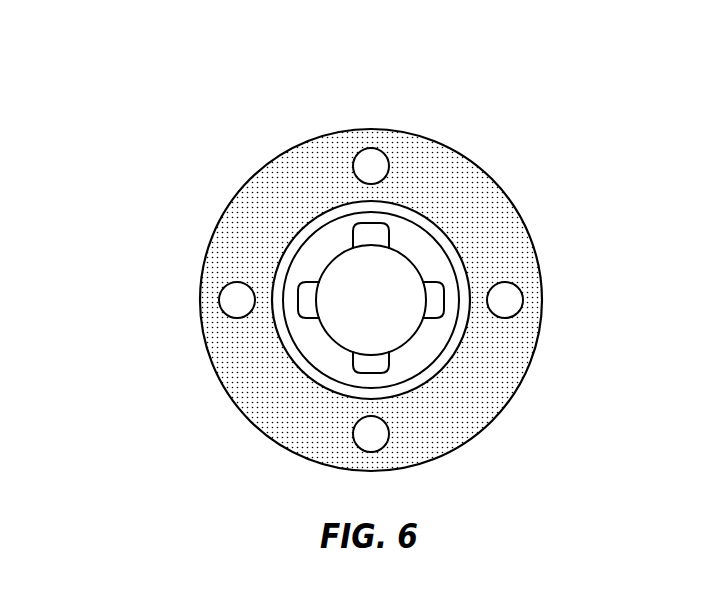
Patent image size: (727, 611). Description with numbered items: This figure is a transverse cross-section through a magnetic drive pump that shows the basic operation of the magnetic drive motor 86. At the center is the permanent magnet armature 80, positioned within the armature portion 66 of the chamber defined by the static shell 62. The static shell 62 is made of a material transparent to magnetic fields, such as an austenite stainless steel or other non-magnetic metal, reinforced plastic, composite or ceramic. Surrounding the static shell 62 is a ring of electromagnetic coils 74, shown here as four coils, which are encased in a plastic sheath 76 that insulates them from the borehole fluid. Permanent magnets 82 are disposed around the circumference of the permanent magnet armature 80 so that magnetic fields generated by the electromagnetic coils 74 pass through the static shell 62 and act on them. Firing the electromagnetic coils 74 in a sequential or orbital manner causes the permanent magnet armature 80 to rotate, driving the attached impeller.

The magnetic drive motor 86 is at (160, 153).
The static shell 62 is at (333, 200).
The plastic sheath 76 is at (217, 225).
The electromagnetic coils 74 is at (508, 308).
The armature portion 66 is at (430, 264).
The permanent magnet armature 80 is at (390, 272).
The permanent magnets 82 is at (300, 318).